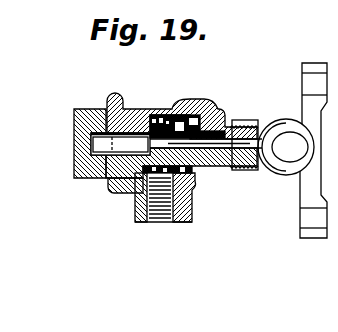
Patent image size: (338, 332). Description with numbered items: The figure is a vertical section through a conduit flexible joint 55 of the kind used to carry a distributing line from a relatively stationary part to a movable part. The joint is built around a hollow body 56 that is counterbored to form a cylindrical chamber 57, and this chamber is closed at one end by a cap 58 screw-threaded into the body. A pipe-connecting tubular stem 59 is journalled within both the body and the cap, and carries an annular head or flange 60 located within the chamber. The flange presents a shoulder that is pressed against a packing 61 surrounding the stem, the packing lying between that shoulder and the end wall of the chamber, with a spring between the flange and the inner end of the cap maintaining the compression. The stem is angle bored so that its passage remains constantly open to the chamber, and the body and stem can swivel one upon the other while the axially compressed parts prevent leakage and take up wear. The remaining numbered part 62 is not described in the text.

The conduit flexible joint 55 is at (177, 104).
The body 56 is at (196, 190).
The cylindrical chamber 57 is at (158, 113).
The cap 58 is at (92, 178).
The tubular stem 59 is at (228, 127).
The annular head or flange 60 is at (200, 113).
The packing 61 is at (213, 177).
The packing nut 62 is at (132, 193).